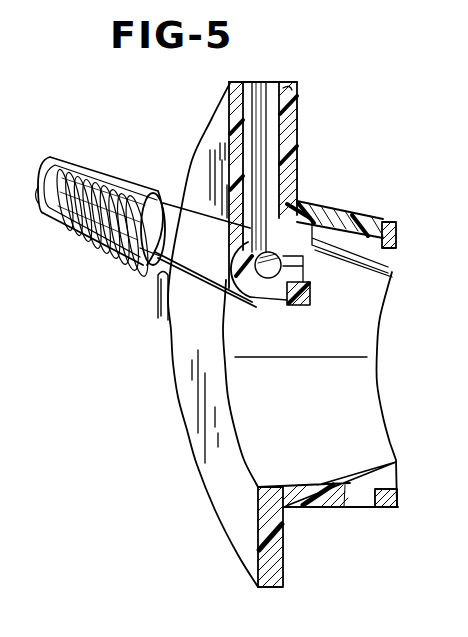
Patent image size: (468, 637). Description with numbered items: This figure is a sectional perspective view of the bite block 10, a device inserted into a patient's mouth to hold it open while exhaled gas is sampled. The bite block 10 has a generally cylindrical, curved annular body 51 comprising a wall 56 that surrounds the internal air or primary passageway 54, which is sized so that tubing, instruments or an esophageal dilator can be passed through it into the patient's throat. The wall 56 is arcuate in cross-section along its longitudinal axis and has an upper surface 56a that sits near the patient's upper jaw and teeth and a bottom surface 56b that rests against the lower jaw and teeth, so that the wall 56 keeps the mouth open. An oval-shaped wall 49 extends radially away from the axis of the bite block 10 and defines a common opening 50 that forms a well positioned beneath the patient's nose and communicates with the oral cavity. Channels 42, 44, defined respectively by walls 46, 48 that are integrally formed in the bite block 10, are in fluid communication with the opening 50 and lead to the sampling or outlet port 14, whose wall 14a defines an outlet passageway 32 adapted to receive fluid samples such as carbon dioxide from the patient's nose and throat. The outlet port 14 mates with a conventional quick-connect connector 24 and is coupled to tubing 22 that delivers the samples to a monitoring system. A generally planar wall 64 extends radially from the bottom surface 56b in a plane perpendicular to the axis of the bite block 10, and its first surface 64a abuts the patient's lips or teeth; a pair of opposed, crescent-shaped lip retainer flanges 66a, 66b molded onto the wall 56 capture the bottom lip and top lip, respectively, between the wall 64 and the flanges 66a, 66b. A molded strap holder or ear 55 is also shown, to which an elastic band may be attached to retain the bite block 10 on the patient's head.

The bite block 10 is at (188, 122).
The outlet port 14 is at (196, 214).
The wall 14a is at (102, 184).
The tubing 22 is at (46, 160).
The quick-connect connector 24 is at (93, 246).
The outlet passageway 32 is at (258, 276).
The channel 42 is at (316, 274).
The channel 44 is at (278, 148).
The wall 46 is at (293, 300).
The wall 48 is at (284, 188).
The oval-shaped wall 49 is at (289, 90).
The opening 50 is at (275, 76).
The annular body 51 is at (316, 516).
The primary passageway 54 is at (240, 396).
The ears 55 is at (155, 314).
The wall 56 is at (319, 485).
The upper surface 56a is at (362, 218).
The bottom surface 56b is at (343, 508).
The planar wall 64 is at (197, 465).
The first surface 64a is at (293, 585).
The lip retainer flange 66a is at (384, 498).
The lip retainer flange 66b is at (386, 222).